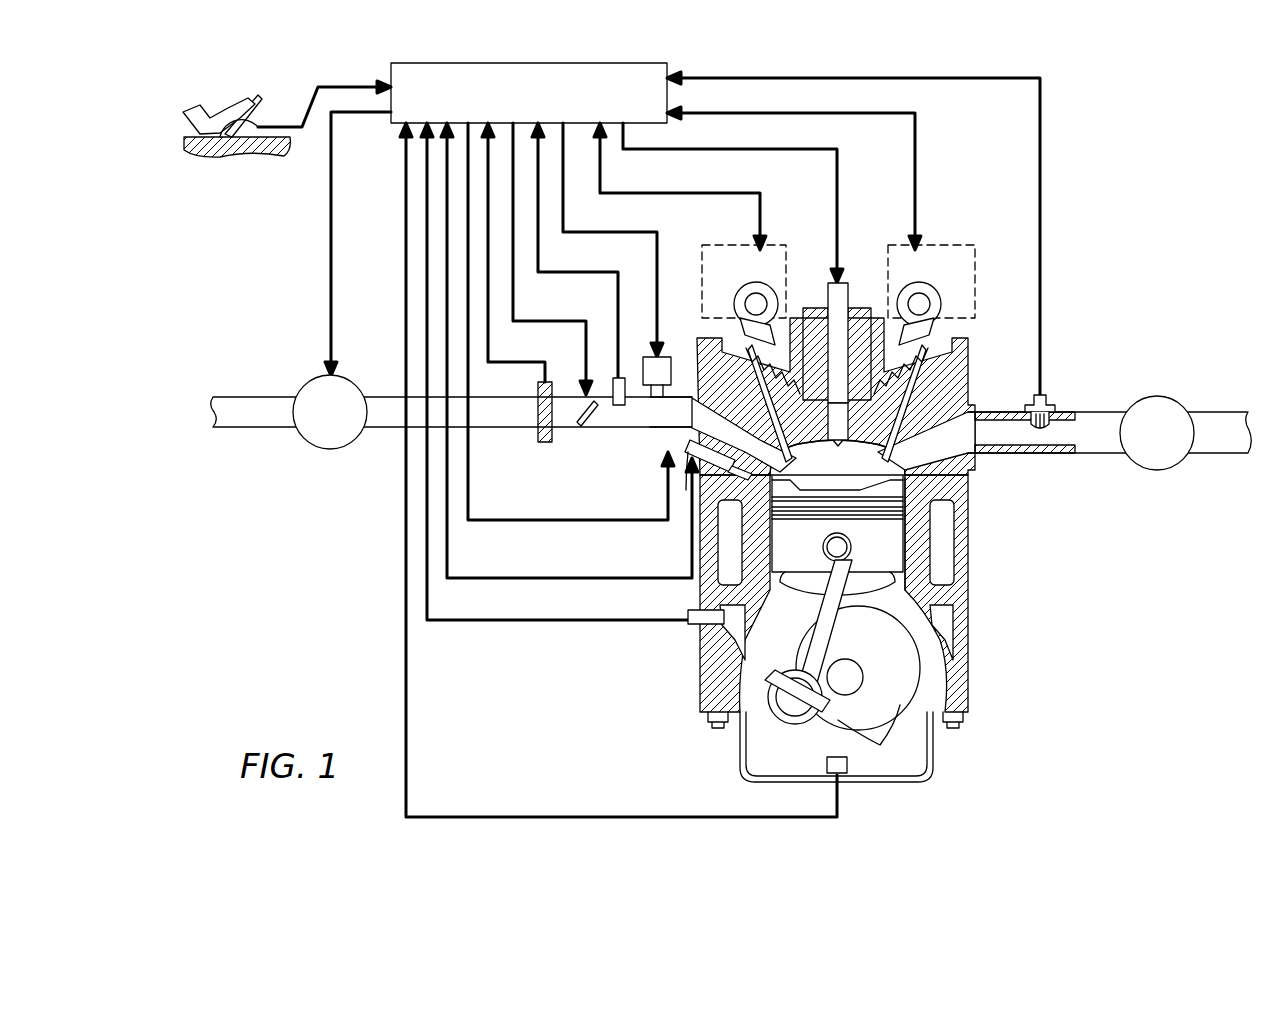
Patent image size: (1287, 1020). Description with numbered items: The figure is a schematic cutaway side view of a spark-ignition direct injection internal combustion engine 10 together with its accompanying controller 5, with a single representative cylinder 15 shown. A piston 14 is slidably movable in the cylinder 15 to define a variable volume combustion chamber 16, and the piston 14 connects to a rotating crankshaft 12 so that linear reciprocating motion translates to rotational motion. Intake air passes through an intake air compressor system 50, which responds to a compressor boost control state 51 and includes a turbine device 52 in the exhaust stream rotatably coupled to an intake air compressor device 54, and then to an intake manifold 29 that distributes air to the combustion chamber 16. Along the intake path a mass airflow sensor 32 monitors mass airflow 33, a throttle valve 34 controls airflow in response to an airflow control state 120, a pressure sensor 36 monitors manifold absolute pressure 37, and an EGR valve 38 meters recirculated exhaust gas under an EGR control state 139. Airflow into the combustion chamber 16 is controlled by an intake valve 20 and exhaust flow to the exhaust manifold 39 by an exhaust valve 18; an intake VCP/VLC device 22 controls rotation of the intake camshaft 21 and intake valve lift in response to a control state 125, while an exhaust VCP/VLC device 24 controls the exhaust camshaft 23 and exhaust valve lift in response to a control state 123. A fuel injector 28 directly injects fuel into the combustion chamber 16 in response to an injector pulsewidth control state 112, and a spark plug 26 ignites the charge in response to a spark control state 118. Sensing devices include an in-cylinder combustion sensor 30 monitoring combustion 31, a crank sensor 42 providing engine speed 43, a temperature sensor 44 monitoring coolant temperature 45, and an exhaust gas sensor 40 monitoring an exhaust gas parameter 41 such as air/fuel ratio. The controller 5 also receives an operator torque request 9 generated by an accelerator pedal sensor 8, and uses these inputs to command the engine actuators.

The controller 5 is at (529, 93).
The accelerator pedal sensor 8 is at (258, 120).
The operator torque request 9 is at (324, 95).
The internal combustion engine 10 is at (978, 598).
The crankshaft 12 is at (885, 722).
The piston 14 is at (837, 535).
The cylinder 15 is at (918, 492).
The combustion chamber 16 is at (837, 460).
The exhaust valve 18 is at (900, 450).
The intake valve 20 is at (775, 432).
The intake camshaft 21 is at (760, 304).
The intake VCP/VLC device 22 is at (744, 281).
The exhaust camshaft 23 is at (921, 304).
The exhaust VCP/VLC device 24 is at (931, 281).
The spark plug 26 is at (847, 290).
The fuel injector 28 is at (665, 455).
The intake manifold 29 is at (683, 405).
The in-cylinder combustion sensor 30 is at (676, 510).
The combustion 31 is at (569, 350).
The mass airflow sensor 32 is at (540, 444).
The mass airflow 33 is at (515, 252).
The throttle valve 34 is at (580, 430).
The pressure sensor 36 is at (618, 405).
The manifold absolute pressure 37 is at (575, 250).
The EGR valve 38 is at (648, 385).
The exhaust manifold 39 is at (998, 412).
The exhaust gas sensor 40 is at (1050, 396).
The exhaust gas parameter 41 is at (853, 225).
The crank sensor 42 is at (833, 768).
The engine speed 43 is at (618, 470).
The temperature sensor 44 is at (700, 632).
The coolant temperature 45 is at (554, 371).
The intake air compressor system 50 is at (297, 378).
The compressor boost control state 51 is at (358, 244).
The turbine device 52 is at (1180, 463).
The intake air compressor device 54 is at (318, 442).
The injector pulsewidth control state 112 is at (571, 321).
The spark control state 118 is at (733, 203).
The airflow control state 120 is at (552, 259).
The exhaust valve lift control state 123 is at (794, 170).
The intake valve lift control state 125 is at (680, 186).
The EGR control state 139 is at (613, 240).